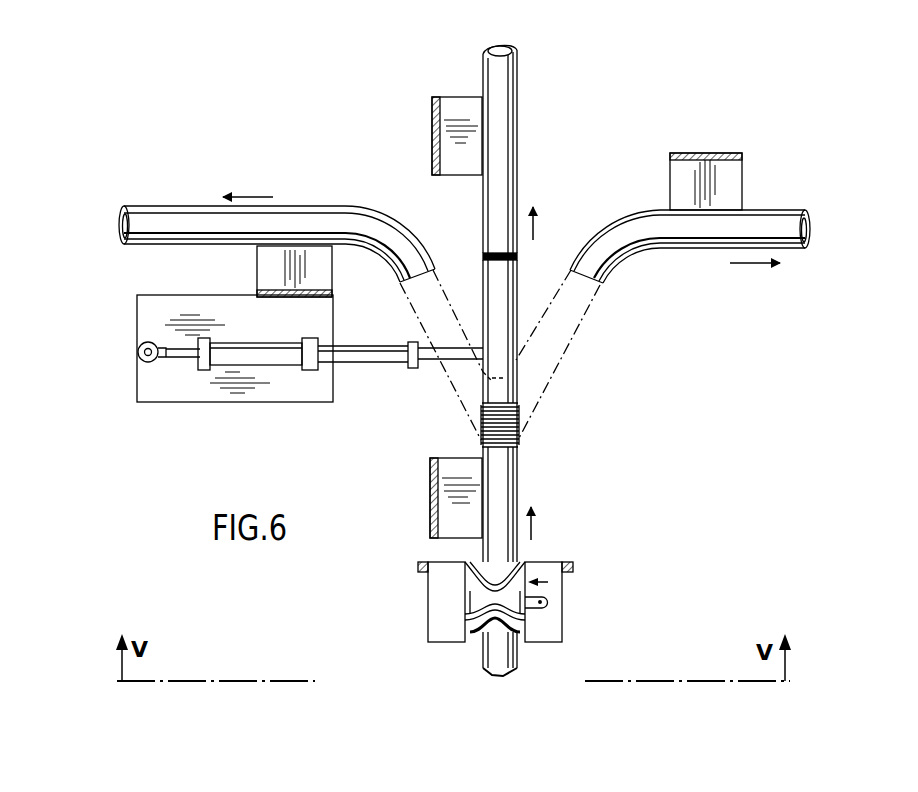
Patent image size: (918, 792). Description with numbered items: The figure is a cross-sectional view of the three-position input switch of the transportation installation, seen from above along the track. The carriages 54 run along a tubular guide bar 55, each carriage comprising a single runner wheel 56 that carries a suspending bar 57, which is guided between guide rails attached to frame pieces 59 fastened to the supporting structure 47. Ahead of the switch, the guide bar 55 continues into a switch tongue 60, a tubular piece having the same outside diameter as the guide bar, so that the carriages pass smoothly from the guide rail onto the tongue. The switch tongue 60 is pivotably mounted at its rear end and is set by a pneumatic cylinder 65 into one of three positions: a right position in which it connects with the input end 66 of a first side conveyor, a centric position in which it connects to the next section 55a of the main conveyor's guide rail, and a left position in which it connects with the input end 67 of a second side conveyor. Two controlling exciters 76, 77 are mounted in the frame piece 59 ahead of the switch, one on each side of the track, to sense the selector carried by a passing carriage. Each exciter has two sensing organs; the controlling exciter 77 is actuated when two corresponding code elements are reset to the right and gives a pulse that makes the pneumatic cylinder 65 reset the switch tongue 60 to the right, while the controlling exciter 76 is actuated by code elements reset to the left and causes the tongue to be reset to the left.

The supporting structure 47 is at (432, 130).
The carriage 54 is at (548, 582).
The tubular guide bar 55 is at (518, 555).
The next section of the main conveyor's guide rail 55a is at (518, 126).
The runner wheel 56 is at (530, 621).
The suspending bar 57 is at (548, 602).
The frame piece 59 is at (573, 566).
The switch tongue 60 is at (481, 276).
The pneumatic cylinder 65 is at (370, 354).
The input end of a first side conveyor 66 is at (650, 252).
The input end of a second side conveyor 67 is at (360, 210).
The controlling exciter 76 is at (437, 612).
The controlling exciter 77 is at (545, 632).